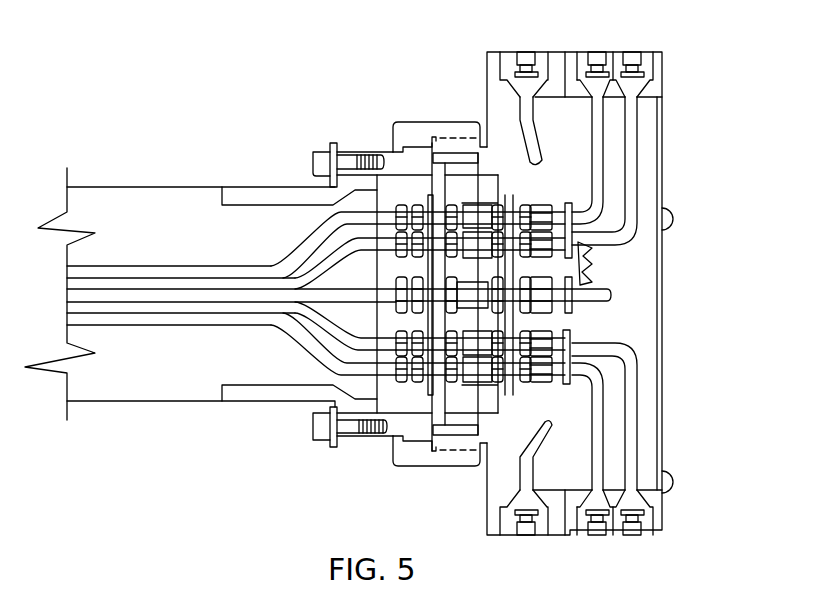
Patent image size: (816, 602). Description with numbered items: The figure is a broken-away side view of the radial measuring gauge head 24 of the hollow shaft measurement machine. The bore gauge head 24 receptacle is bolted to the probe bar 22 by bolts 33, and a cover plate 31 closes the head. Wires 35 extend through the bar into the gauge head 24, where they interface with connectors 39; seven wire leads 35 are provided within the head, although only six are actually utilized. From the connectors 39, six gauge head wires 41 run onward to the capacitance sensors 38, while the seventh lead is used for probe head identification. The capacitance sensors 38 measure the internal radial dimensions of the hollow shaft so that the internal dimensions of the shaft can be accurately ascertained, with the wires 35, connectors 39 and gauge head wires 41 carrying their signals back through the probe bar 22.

The probe bar 22 is at (123, 188).
The gauge head 24 is at (636, 47).
The cover plate 31 is at (668, 306).
The bolts 33 is at (327, 147).
The wires 35 is at (105, 318).
The capacitance sensors 38 is at (645, 72).
The connectors 39 is at (478, 372).
The gauge head wires 41 is at (634, 380).